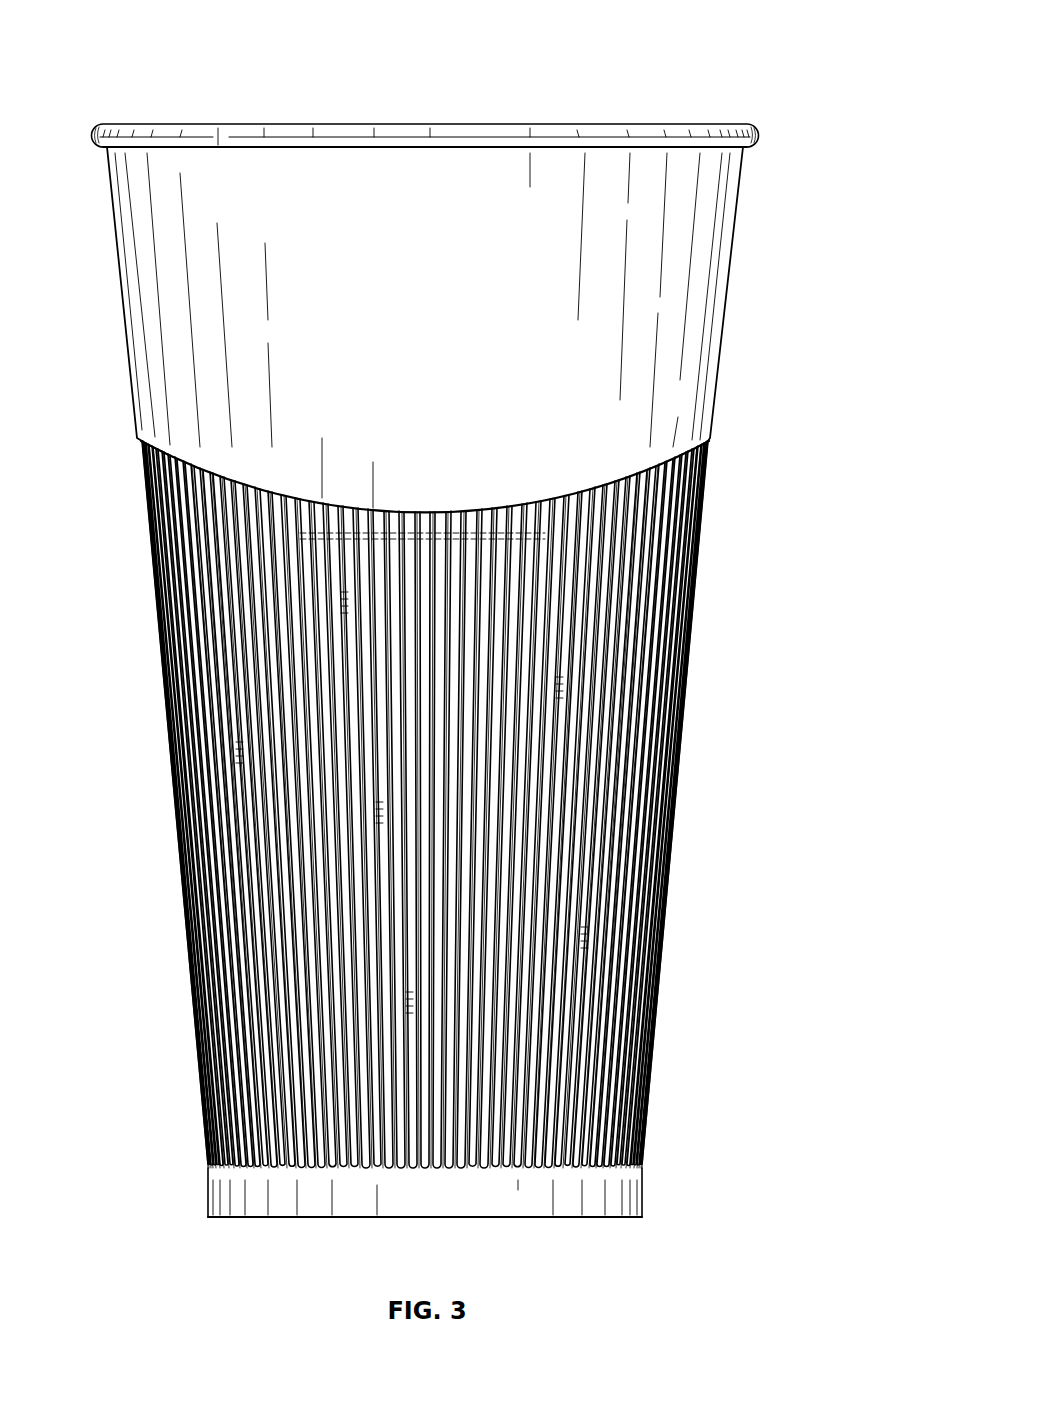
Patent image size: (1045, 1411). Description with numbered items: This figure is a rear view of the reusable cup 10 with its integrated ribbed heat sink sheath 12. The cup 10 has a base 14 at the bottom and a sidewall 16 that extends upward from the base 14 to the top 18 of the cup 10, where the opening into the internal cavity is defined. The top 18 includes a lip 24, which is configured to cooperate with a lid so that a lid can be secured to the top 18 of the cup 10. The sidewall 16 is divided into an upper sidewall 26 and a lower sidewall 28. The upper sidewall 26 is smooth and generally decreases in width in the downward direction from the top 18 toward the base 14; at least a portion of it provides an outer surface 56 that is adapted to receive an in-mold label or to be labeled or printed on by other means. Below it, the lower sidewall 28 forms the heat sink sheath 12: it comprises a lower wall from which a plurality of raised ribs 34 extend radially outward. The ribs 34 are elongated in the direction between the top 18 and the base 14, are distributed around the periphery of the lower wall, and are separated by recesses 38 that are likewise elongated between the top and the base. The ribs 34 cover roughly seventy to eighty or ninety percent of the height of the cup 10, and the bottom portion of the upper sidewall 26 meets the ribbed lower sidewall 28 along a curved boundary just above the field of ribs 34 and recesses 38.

The reusable cup 10 is at (696, 34).
The integrated ribbed heat sink sheath 12 is at (690, 729).
The base 14 is at (642, 1198).
The sidewall 16 is at (130, 393).
The top 18 is at (722, 124).
The lip 24 is at (757, 141).
The upper sidewall 26 is at (730, 287).
The lower sidewall 28 is at (692, 582).
The raised ribs 34 is at (222, 683).
The recesses 38 is at (416, 506).
The outer surface 56 is at (703, 240).